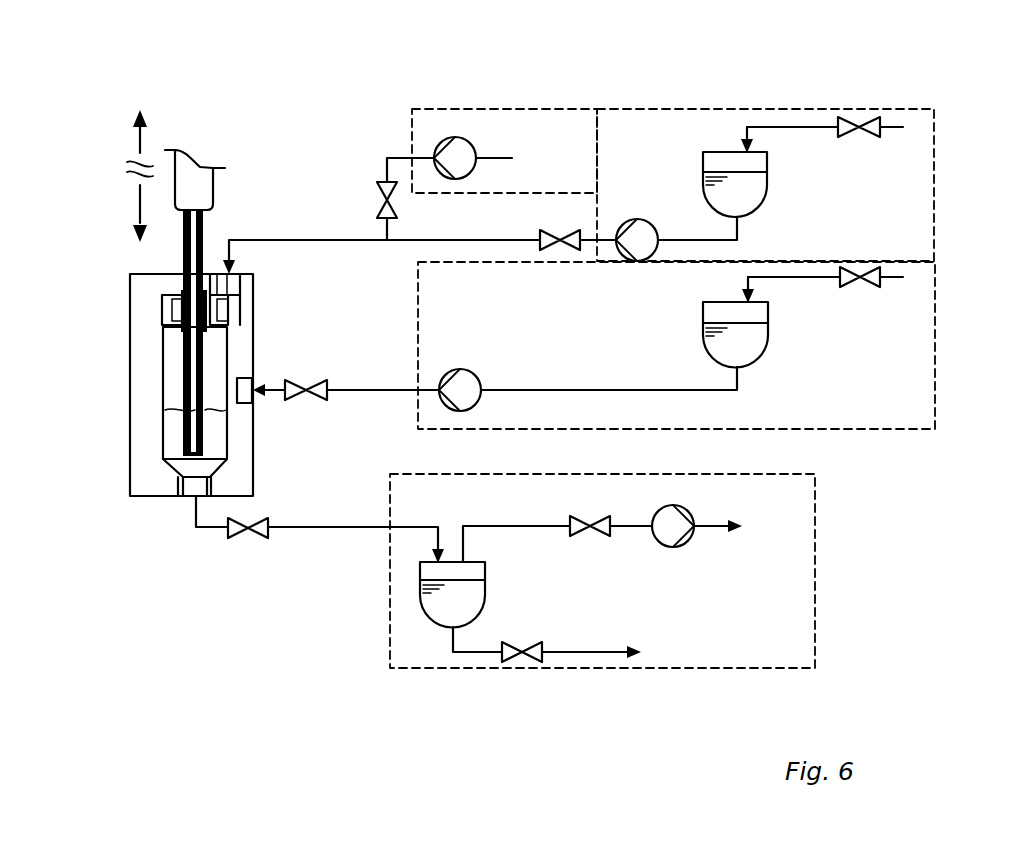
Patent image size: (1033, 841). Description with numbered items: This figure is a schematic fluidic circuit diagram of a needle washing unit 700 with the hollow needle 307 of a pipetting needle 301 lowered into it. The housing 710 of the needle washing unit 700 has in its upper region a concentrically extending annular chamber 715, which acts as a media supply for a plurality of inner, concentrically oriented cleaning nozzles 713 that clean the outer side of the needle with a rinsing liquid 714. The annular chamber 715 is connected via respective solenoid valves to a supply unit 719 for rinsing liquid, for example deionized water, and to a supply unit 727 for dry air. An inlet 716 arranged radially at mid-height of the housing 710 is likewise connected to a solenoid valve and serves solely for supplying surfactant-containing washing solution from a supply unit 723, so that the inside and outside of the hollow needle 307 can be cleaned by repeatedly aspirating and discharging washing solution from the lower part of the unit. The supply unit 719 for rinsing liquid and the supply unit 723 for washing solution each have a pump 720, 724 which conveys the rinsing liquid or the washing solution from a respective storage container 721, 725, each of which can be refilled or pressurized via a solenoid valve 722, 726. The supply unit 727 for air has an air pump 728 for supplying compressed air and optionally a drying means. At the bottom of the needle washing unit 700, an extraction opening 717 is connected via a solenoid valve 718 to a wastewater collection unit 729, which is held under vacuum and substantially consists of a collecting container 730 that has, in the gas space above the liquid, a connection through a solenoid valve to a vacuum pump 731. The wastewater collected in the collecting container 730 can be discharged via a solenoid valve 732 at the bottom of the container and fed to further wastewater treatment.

The pipetting needle 301 is at (200, 183).
The hollow needle 307 is at (182, 383).
The needle washing unit 700 is at (131, 470).
The housing 710 is at (240, 463).
The cleaning nozzles 713 is at (165, 304).
The rinsing liquid 714 is at (275, 238).
The annular chamber 715 is at (237, 305).
The radial inlet 716 is at (252, 378).
The extraction opening 717 is at (192, 490).
The solenoid valve 718 is at (247, 533).
The supply unit for rinsing liquid 719 is at (772, 108).
The pump 720 is at (630, 220).
The storage container 721 is at (763, 200).
The solenoid valve 722 is at (860, 138).
The supply unit for washing solution 723 is at (822, 432).
The pump 724 is at (462, 372).
The storage container 725 is at (767, 352).
The solenoid valve 726 is at (860, 287).
The supply unit for dry air 727 is at (467, 108).
The air pump 728 is at (473, 147).
The wastewater collection unit 729 is at (815, 600).
The collecting container 730 is at (485, 605).
The vacuum pump 731 is at (670, 545).
The solenoid valve 732 is at (523, 660).